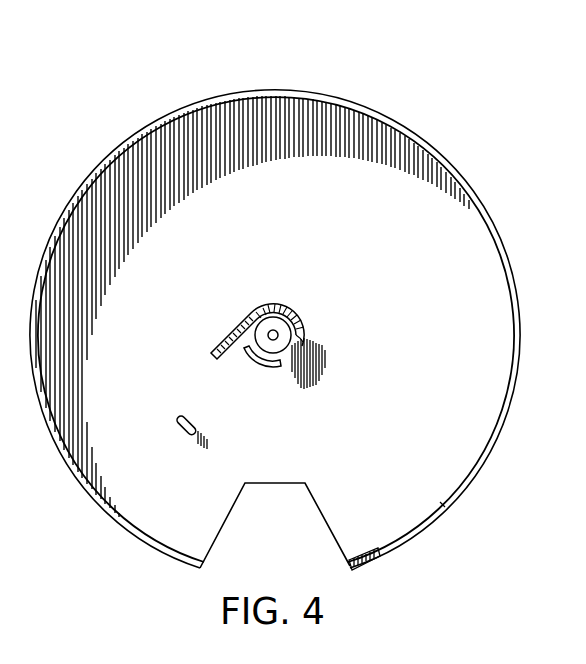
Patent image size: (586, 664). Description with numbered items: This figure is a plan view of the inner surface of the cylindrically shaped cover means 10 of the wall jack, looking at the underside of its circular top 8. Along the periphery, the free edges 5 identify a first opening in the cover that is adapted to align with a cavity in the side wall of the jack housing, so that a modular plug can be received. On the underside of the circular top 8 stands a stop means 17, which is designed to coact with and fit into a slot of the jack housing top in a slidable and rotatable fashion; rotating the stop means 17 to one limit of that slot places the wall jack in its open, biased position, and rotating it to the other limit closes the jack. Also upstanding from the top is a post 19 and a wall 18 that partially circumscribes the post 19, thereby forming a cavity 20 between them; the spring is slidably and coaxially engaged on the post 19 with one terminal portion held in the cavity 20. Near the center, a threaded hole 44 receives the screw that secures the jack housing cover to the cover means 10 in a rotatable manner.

The cover means 10 is at (477, 137).
The circular top 8 is at (420, 345).
The free edges of first opening 5 is at (278, 483).
The stop means 17 is at (178, 428).
The wall 18 is at (246, 316).
The post 19 is at (277, 330).
The threaded hole 44 is at (260, 338).
The cavity 20 is at (264, 363).